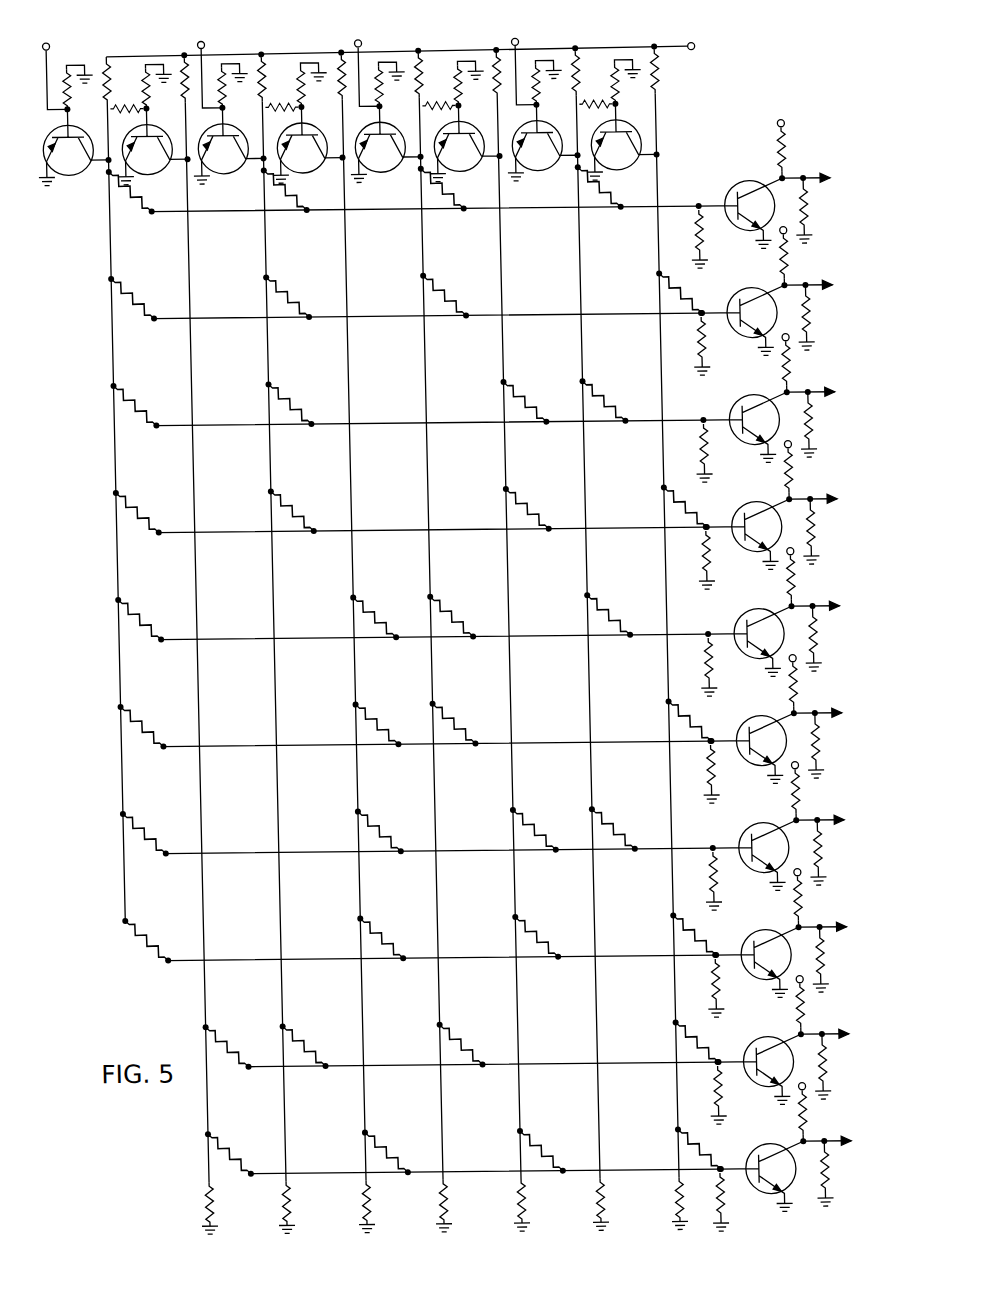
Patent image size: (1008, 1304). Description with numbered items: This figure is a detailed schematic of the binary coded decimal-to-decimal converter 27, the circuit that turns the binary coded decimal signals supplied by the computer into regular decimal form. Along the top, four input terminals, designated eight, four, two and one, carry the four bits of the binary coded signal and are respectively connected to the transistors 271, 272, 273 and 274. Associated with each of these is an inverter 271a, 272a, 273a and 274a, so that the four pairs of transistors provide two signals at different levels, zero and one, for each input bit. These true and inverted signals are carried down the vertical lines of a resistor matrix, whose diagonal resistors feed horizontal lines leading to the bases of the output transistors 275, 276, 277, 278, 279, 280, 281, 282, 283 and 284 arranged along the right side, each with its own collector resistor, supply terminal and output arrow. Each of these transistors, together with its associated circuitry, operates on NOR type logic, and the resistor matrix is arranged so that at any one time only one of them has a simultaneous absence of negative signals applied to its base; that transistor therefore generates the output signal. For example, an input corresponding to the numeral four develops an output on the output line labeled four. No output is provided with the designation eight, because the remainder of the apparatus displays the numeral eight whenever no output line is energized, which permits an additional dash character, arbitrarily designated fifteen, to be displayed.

The binary coded decimal-to-decimal converter 27 is at (440, 1263).
The transistor 271 is at (67, 176).
The inverter 271a is at (150, 175).
The transistor 272 is at (222, 176).
The inverter 272a is at (305, 175).
The transistor 273 is at (379, 176).
The inverter 273a is at (462, 175).
The transistor 274 is at (536, 176).
The inverter 274a is at (619, 175).
The transistor 275 is at (728, 188).
The transistor 276 is at (734, 292).
The transistor 277 is at (734, 399).
The transistor 278 is at (734, 506).
The transistor 279 is at (734, 613).
The transistor 280 is at (734, 720).
The transistor 281 is at (734, 827).
The transistor 282 is at (734, 934).
The transistor 283 is at (734, 1041).
The transistor 284 is at (734, 1148).